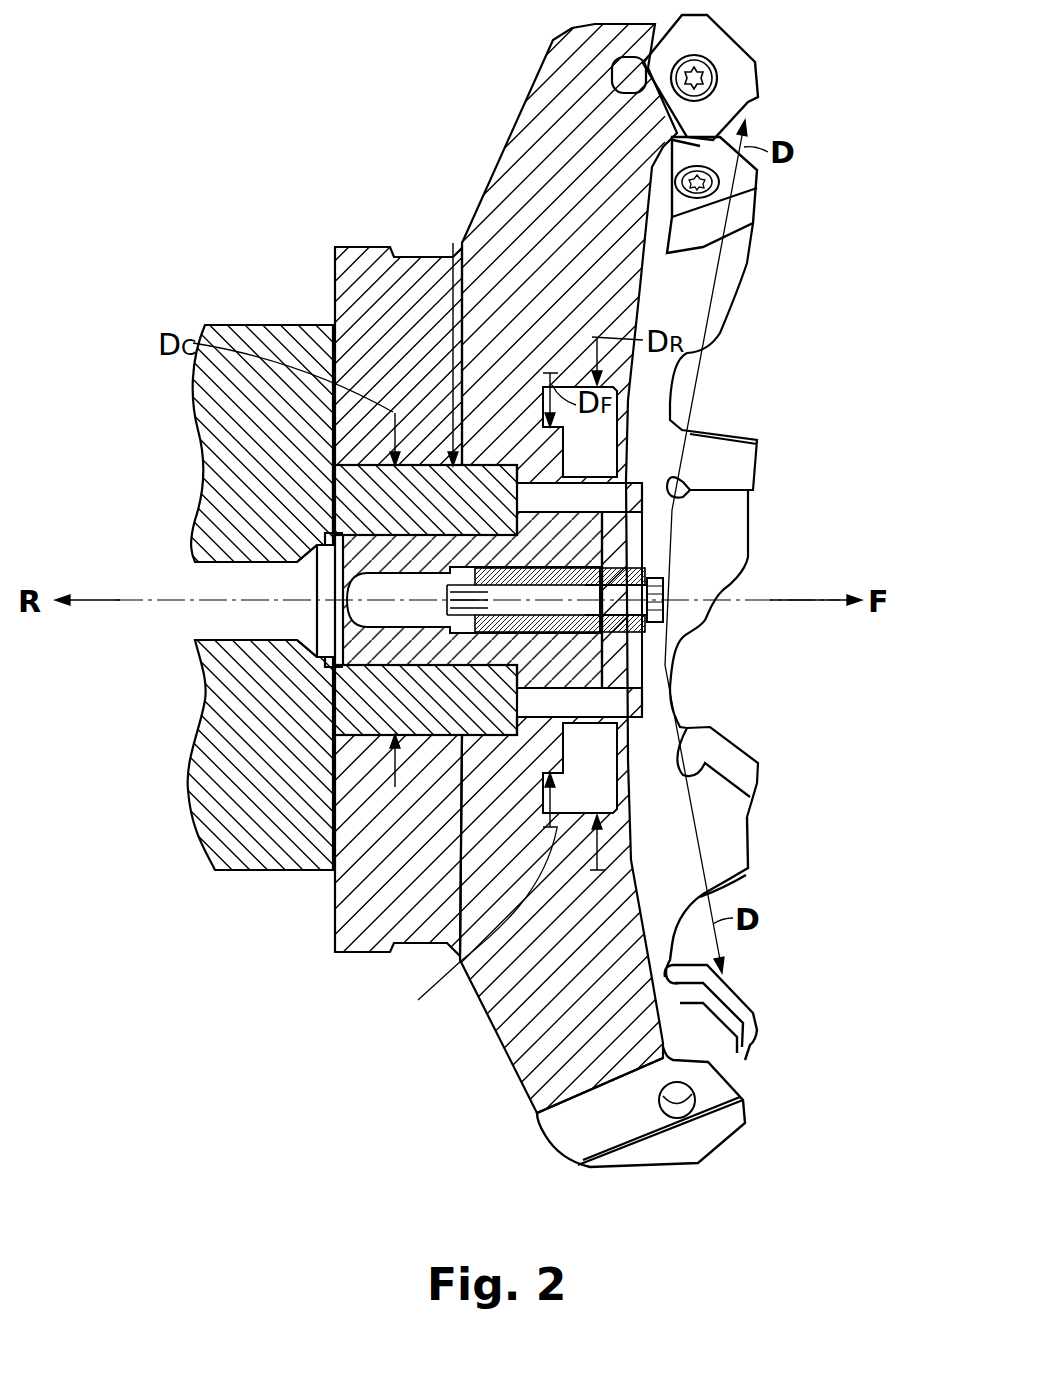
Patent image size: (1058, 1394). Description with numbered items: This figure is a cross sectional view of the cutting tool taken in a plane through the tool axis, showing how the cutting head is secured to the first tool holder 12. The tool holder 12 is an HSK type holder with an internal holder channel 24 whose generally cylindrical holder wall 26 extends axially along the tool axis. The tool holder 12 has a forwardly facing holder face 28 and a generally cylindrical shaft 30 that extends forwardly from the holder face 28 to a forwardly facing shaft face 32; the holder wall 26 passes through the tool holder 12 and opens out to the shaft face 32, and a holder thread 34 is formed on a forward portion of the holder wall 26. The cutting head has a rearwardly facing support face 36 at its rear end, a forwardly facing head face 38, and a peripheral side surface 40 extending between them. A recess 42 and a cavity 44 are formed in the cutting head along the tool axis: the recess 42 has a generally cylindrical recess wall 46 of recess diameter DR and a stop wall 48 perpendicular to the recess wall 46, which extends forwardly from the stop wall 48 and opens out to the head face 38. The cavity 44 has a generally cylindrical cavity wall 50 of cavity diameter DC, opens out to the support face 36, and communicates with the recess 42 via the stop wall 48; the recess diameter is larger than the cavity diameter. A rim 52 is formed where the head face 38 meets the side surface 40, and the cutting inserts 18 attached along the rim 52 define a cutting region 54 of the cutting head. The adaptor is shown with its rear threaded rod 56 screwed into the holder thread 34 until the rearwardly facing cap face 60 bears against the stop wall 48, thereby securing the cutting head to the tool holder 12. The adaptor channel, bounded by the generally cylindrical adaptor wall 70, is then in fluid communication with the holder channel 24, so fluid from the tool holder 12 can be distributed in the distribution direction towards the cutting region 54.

The first tool holder 12 is at (233, 912).
The cutting inserts 18 is at (745, 78).
The holder channel 24 is at (250, 612).
The holder wall 26 is at (325, 548).
The holder face 28 is at (337, 367).
The shaft 30 is at (462, 243).
The shaft face 32 is at (622, 458).
The holder thread 34 is at (520, 512).
The support face 36 is at (335, 915).
The head face 38 is at (740, 835).
The peripheral side surface 40 is at (543, 1135).
The recess 42 is at (715, 727).
The cavity 44 is at (478, 718).
The recess wall 46 is at (469, 924).
The stop wall 48 is at (605, 766).
The cavity wall 50 is at (418, 728).
The rim 52 is at (803, 120).
The cutting region 54 is at (778, 37).
The threaded rod 56 is at (318, 675).
The cap face 60 is at (340, 505).
The adaptor wall 70 is at (248, 569).